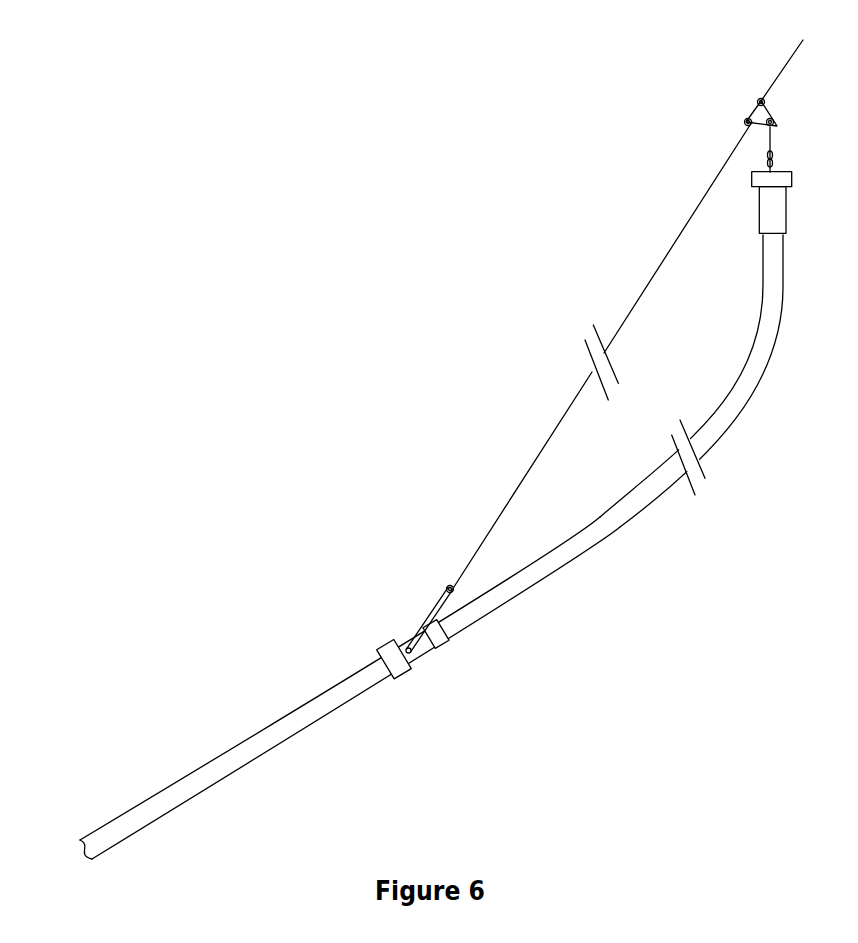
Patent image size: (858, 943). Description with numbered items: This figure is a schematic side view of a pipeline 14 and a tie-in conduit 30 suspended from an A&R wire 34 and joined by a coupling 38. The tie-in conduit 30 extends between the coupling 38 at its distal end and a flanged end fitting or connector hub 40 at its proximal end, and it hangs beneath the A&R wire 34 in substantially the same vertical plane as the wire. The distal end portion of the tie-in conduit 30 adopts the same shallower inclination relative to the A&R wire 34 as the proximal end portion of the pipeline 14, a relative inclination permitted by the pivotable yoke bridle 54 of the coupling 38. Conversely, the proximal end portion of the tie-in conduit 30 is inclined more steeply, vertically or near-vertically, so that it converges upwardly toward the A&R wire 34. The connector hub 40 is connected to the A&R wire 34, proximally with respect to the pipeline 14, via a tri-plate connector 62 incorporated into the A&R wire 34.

The pipeline 14 is at (300, 720).
The tie-in conduit 30 is at (733, 405).
The A&R wire 34 is at (652, 275).
The coupling 38 is at (393, 648).
The connector hub 40 is at (775, 216).
The yoke bridle 54 is at (427, 632).
The tri-plate connector 62 is at (752, 110).